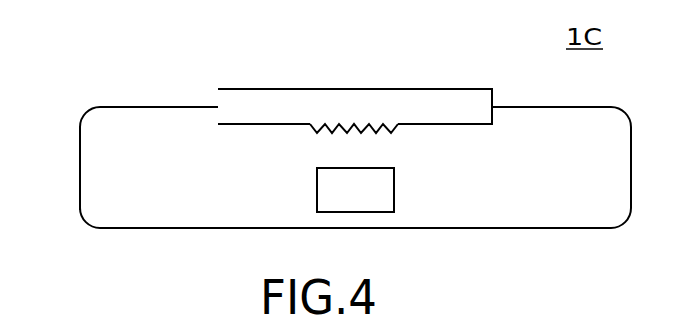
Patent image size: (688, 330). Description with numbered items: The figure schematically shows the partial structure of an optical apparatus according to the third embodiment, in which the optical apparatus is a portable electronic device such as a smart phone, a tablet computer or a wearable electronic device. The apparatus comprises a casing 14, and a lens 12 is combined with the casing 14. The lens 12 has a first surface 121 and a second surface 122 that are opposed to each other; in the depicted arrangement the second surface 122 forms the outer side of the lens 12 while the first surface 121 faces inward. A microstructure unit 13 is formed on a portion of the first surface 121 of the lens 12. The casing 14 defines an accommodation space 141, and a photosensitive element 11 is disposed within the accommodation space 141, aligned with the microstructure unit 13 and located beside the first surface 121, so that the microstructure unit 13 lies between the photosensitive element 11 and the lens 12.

The photosensitive element 11 is at (374, 182).
The lens 12 is at (264, 94).
The first surface 121 is at (454, 125).
The second surface 122 is at (414, 89).
The microstructure unit 13 is at (322, 133).
The casing 14 is at (166, 111).
The accommodation space 141 is at (98, 175).